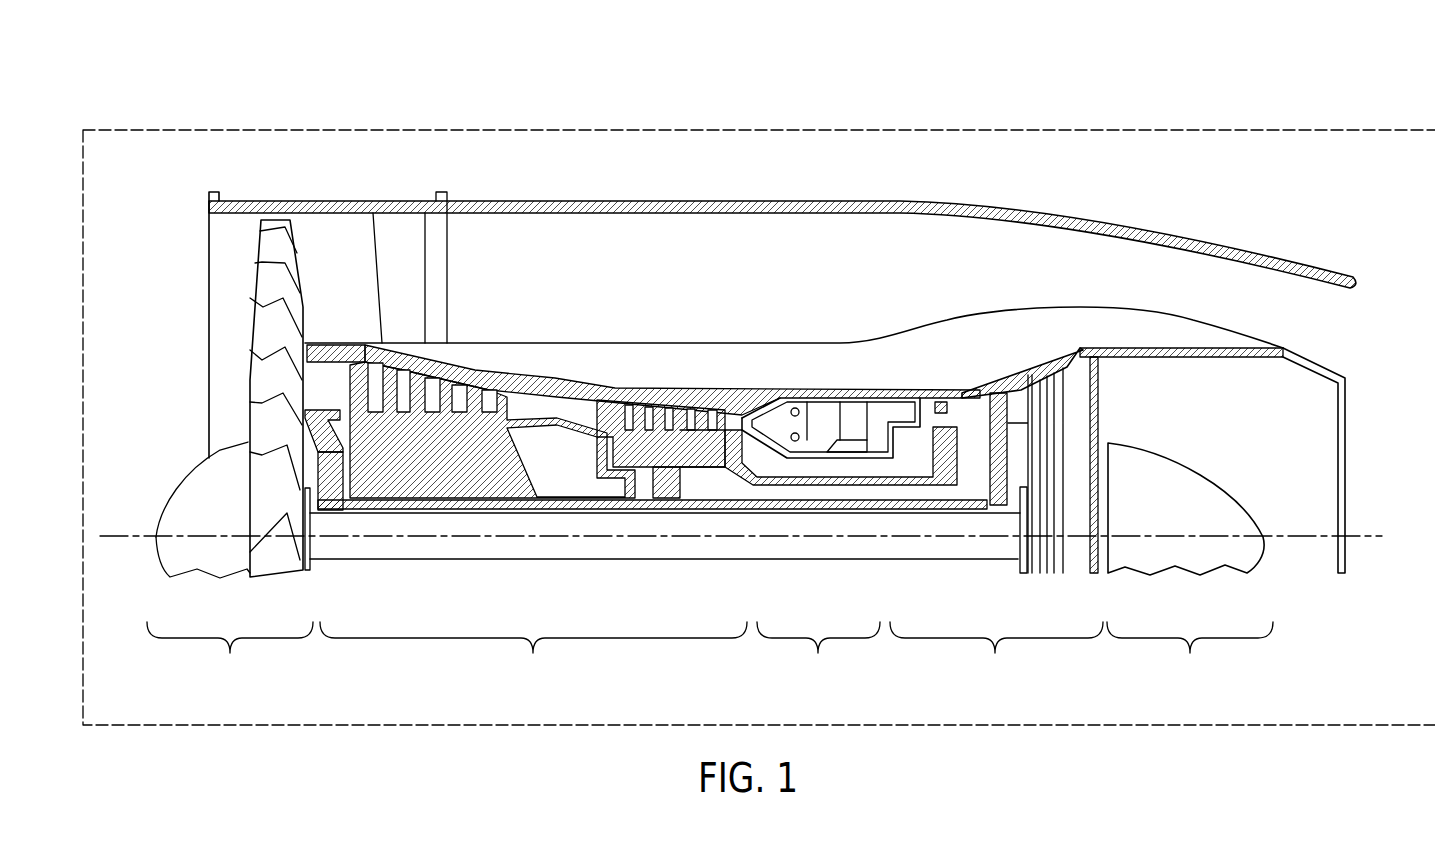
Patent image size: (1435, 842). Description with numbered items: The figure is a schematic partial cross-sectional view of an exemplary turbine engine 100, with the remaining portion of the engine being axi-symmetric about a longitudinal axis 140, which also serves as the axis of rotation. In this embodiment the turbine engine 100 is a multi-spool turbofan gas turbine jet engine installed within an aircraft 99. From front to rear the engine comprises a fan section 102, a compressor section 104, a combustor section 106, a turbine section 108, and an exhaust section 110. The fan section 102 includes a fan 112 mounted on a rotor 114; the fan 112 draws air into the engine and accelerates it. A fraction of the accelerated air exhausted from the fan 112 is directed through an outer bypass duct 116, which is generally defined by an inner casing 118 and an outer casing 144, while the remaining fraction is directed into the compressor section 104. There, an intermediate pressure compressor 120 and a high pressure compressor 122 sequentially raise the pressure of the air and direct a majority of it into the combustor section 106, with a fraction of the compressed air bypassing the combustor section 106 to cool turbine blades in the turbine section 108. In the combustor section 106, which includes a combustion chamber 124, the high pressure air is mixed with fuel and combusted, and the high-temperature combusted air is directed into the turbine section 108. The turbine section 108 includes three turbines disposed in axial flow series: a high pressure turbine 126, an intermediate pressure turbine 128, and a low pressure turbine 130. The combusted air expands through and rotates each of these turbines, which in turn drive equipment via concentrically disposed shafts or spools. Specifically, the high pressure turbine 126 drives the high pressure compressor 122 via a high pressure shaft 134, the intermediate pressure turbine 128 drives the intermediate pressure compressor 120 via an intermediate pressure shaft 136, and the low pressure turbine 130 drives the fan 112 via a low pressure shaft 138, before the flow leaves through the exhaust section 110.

The aircraft 99 is at (1206, 126).
The turbine engine 100 is at (369, 154).
The fan section 102 is at (230, 564).
The compressor section 104 is at (533, 654).
The combustor section 106 is at (818, 654).
The turbine section 108 is at (996, 527).
The exhaust section 110 is at (1190, 564).
The fan 112 is at (267, 337).
The rotor 114 is at (310, 568).
The outer bypass duct 116 is at (718, 237).
The inner casing 118 is at (545, 363).
The intermediate pressure compressor 120 is at (445, 495).
The high pressure compressor 122 is at (682, 508).
The combustion chamber 124 is at (870, 415).
The high pressure turbine 126 is at (948, 418).
The intermediate pressure turbine 128 is at (1018, 390).
The low pressure turbine 130 is at (1082, 358).
The high pressure shaft 134 is at (773, 488).
The intermediate pressure shaft 136 is at (850, 509).
The low pressure shaft 138 is at (993, 543).
The longitudinal axis 140 is at (132, 533).
The outer casing 144 is at (841, 201).